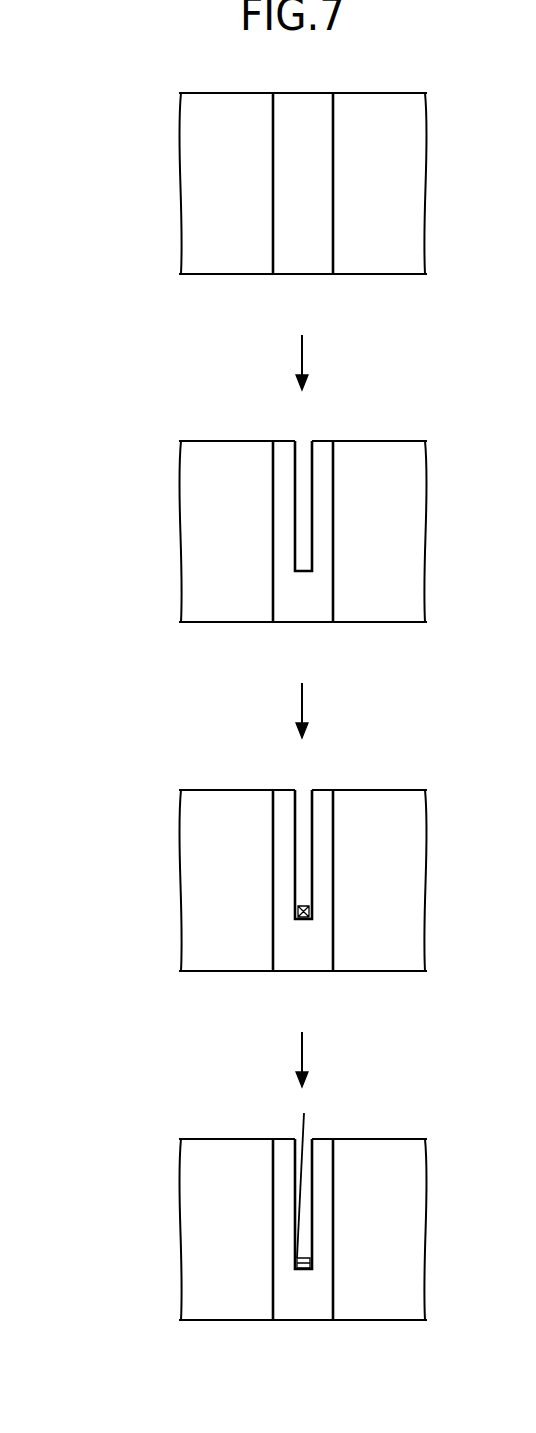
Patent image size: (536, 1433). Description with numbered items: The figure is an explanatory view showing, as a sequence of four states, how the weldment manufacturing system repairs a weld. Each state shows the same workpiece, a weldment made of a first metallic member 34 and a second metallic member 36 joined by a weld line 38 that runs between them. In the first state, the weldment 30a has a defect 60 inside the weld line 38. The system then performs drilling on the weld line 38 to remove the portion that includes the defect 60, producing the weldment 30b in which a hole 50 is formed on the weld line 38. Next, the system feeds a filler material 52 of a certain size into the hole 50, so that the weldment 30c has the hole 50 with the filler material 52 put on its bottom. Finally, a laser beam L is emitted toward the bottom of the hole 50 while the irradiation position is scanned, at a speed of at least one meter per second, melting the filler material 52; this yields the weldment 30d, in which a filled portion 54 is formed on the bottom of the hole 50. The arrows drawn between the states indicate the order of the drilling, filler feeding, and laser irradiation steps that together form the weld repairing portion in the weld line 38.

The weldment 30a is at (141, 120).
The weldment 30b is at (141, 468).
The weldment 30c is at (141, 817).
The weldment 30d is at (141, 1165).
The first metallic member 34 is at (212, 106).
The second metallic member 36 is at (368, 106).
The weld line 38 is at (302, 106).
The hole 50 is at (301, 454).
The filler material 52 is at (298, 906).
The filled portion 54 is at (297, 1262).
The defect 60 is at (303, 178).
The laser beam L is at (304, 1120).